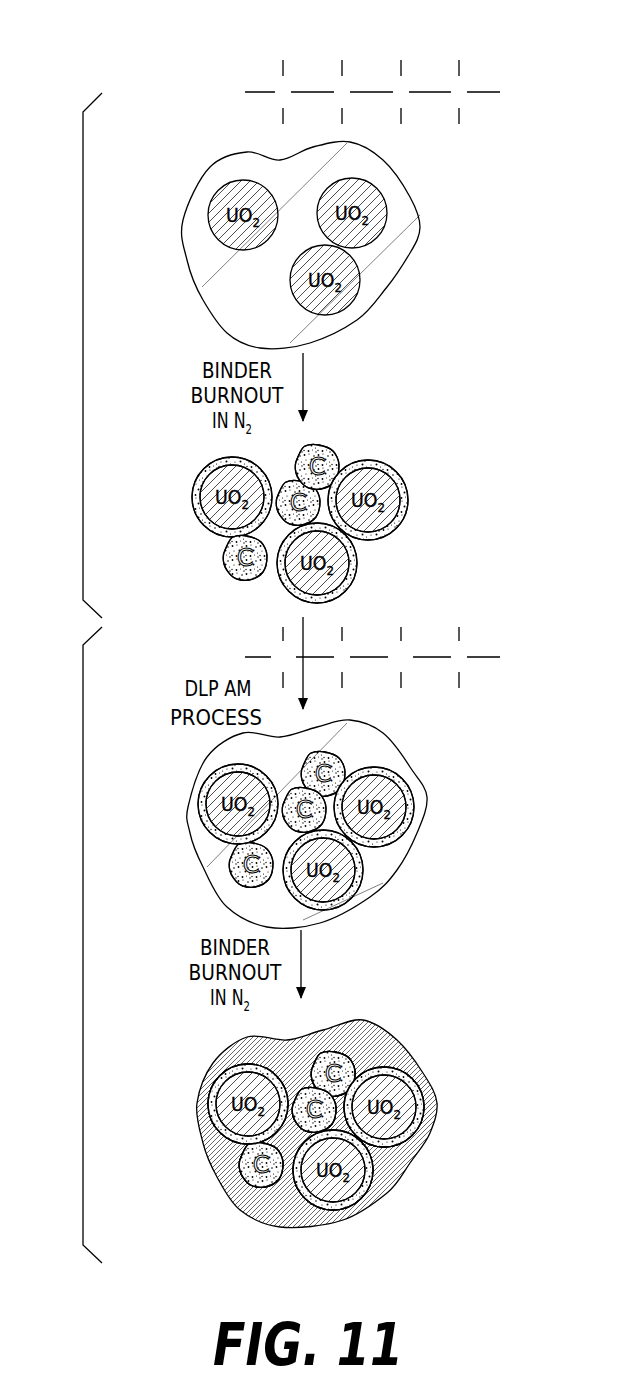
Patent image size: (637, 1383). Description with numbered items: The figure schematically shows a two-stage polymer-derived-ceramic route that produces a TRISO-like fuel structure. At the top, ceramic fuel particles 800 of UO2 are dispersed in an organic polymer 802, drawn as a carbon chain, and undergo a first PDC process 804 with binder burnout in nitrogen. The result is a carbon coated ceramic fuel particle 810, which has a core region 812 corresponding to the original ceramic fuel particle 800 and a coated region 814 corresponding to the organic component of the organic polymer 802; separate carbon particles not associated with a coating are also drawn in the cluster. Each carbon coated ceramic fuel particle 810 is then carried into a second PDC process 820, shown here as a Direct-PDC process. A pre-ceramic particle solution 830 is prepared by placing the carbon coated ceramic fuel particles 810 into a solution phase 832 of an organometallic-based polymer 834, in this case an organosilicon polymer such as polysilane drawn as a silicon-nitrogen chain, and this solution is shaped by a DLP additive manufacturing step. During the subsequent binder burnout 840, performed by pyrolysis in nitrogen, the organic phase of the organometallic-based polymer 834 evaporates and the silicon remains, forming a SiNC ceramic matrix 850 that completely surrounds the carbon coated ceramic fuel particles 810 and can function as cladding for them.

The ceramic fuel particle 800 is at (383, 216).
The organic polymer 802 is at (252, 40).
The first PDC process 804 is at (82, 298).
The carbon coated ceramic fuel particle 810 is at (430, 458).
The core region 812 is at (372, 529).
The coated region 814 is at (410, 500).
The second PDC process 820 is at (82, 948).
The pre-ceramic particle solution 830 is at (436, 882).
The solution phase 832 is at (243, 907).
The organometallic-based polymer 834 is at (442, 708).
The binder burnout 840 is at (162, 990).
The SiNC ceramic matrix 850 is at (258, 1205).